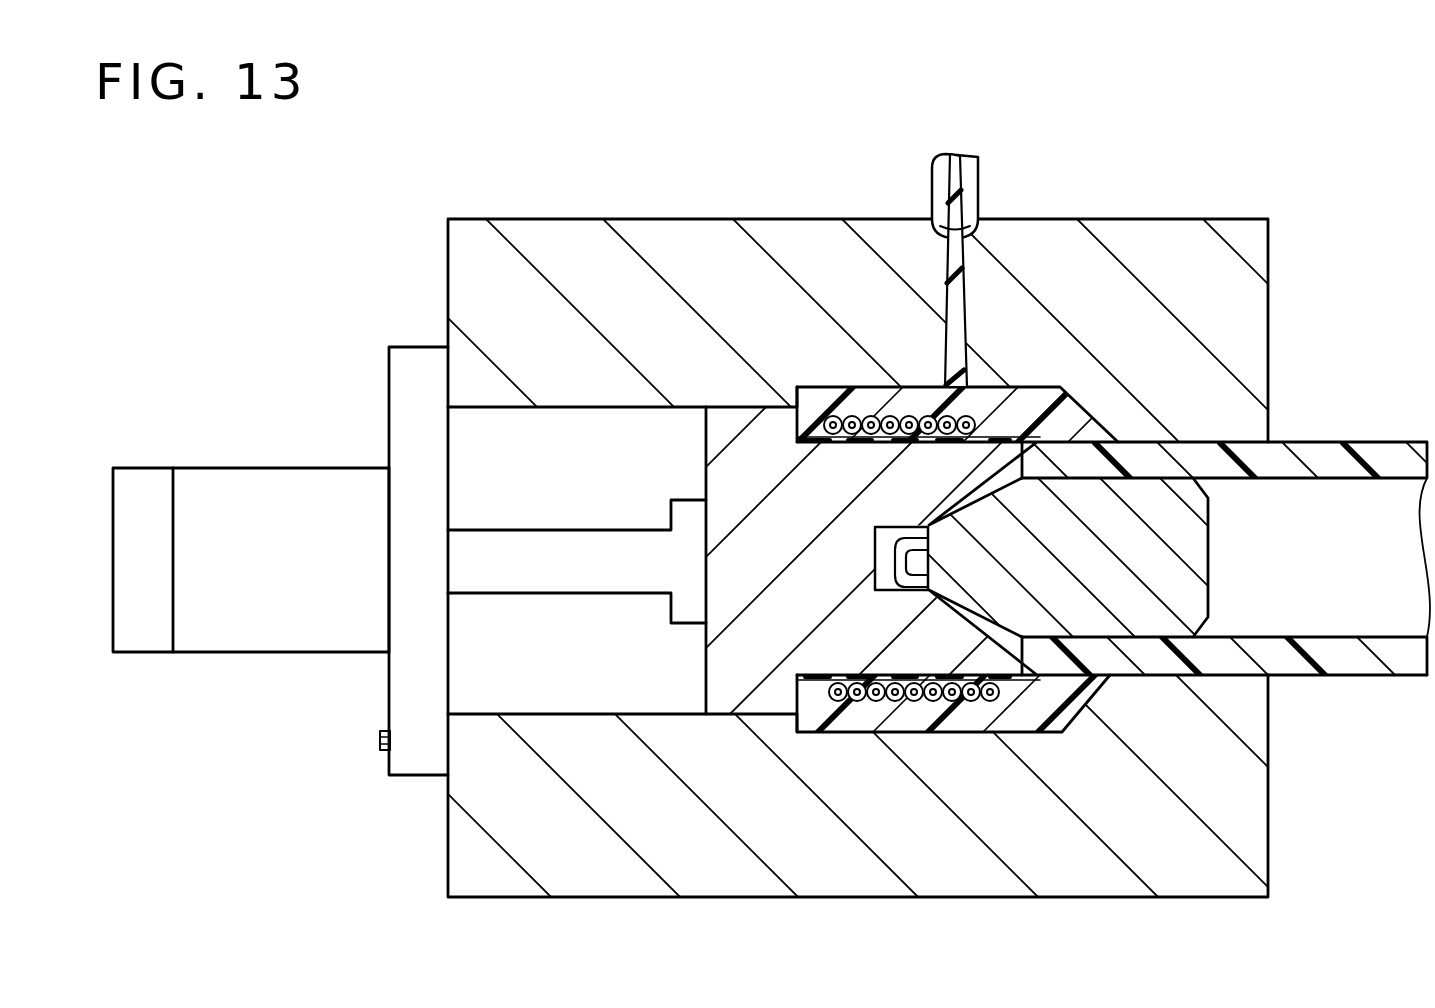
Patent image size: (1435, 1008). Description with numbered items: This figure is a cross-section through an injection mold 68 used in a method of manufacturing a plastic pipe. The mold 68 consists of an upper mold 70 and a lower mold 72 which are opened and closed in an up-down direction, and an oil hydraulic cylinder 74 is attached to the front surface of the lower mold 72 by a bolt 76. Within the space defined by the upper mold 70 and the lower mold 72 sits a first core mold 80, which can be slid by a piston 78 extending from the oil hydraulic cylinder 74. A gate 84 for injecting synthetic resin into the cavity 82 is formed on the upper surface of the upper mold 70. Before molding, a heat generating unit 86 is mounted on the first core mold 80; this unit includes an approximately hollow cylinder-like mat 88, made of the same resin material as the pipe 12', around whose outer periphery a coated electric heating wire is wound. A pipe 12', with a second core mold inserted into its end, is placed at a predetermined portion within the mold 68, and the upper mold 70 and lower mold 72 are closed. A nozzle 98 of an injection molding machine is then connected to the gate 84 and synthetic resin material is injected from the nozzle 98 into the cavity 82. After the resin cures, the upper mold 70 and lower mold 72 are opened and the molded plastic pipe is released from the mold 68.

The injection mold 68 is at (1152, 115).
The upper mold 70 is at (1252, 256).
The lower mold 72 is at (1250, 833).
The oil hydraulic cylinder 74 is at (251, 486).
The bolt 76 is at (380, 741).
The piston 78 is at (545, 547).
The first core mold 80 is at (752, 447).
The cavity 82 is at (1077, 433).
The gate 84 is at (990, 243).
The heat generating unit 86 is at (852, 400).
The mat 88 is at (987, 433).
The nozzle 98 is at (932, 183).
The pipe 12' is at (1228, 598).